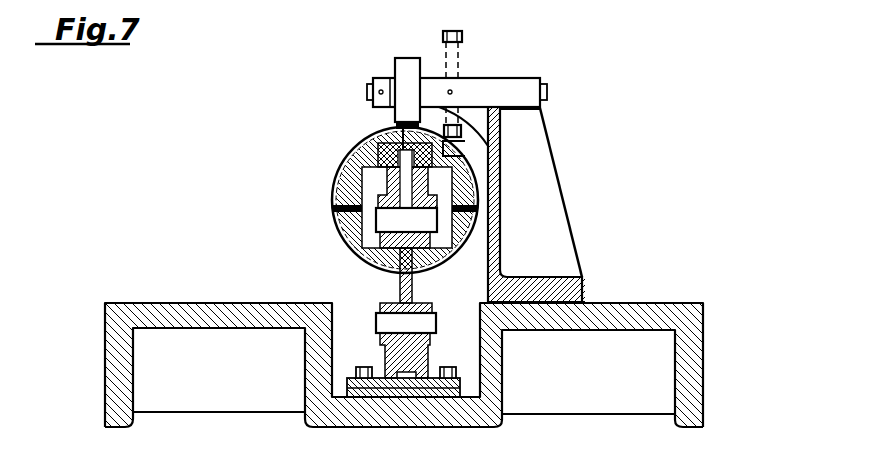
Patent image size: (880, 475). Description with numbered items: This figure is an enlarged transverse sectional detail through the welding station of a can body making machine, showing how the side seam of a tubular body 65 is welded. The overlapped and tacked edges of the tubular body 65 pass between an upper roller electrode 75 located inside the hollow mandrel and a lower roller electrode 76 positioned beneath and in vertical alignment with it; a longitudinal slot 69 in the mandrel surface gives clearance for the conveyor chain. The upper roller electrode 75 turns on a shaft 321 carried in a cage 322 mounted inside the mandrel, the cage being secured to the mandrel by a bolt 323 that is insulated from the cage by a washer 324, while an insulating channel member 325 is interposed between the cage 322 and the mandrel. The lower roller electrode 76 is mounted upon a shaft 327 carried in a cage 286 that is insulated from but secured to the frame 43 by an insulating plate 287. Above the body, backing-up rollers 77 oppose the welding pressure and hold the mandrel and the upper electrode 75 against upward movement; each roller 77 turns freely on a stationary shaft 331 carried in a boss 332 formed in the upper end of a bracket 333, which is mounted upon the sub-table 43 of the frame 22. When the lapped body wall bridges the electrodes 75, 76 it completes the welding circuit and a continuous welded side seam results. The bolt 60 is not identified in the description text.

The frame 22 is at (697, 360).
The sub-table 43 is at (628, 306).
The bolt 60 is at (462, 34).
The tubular body 65 is at (345, 160).
The longitudinal slot 69 is at (466, 135).
The upper roller electrode 75 is at (404, 183).
The lower roller electrode 76 is at (414, 285).
The backing-up rollers 77 is at (407, 60).
The cage 286 is at (450, 383).
The insulating plate 287 is at (372, 399).
The shaft 321 is at (378, 222).
The cage 322 is at (472, 181).
The bolt 323 is at (398, 128).
The washer 324 is at (340, 167).
The insulating channel member 325 is at (367, 146).
The shaft 327 is at (390, 320).
The stationary shaft 331 is at (550, 94).
The boss 332 is at (478, 80).
The bracket 333 is at (567, 239).